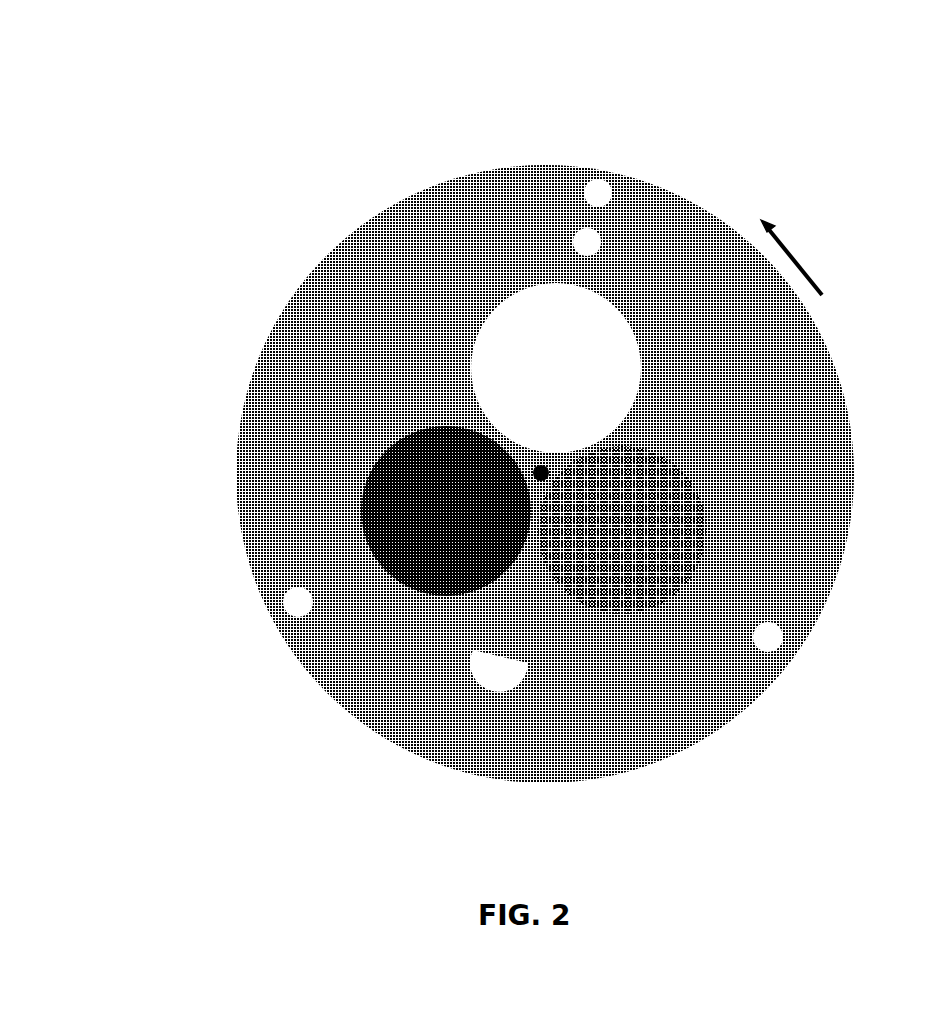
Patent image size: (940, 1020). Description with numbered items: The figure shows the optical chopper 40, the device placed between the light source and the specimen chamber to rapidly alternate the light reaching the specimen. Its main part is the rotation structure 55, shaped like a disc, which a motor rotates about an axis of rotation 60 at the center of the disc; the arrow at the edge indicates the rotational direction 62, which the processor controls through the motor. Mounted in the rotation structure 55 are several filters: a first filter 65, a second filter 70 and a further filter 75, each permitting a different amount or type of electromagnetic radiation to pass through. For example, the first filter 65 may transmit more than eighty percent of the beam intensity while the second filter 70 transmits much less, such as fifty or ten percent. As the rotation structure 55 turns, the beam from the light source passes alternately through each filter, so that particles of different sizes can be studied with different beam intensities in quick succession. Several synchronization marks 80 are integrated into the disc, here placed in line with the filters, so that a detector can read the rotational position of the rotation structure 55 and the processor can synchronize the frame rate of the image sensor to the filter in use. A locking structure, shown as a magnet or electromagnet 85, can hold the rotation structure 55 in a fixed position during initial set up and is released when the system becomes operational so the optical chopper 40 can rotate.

The optical chopper 40 is at (157, 107).
The rotation structure 55 is at (295, 450).
The axis of rotation 60 is at (536, 470).
The rotational direction 62 is at (808, 273).
The first filter 65 is at (556, 368).
The second filter 70 is at (622, 530).
The second filter 75 is at (446, 511).
The synchronization mark 80 is at (572, 243).
The magnet or electromagnet 85 is at (470, 673).